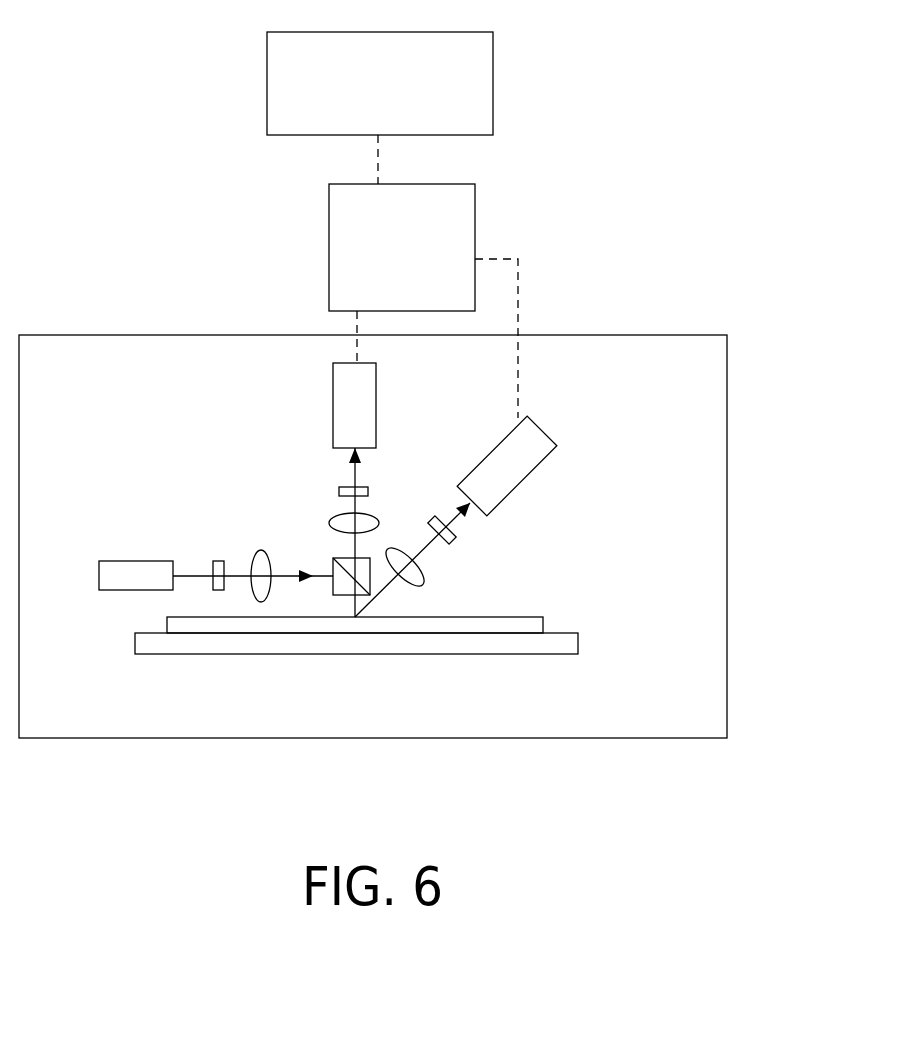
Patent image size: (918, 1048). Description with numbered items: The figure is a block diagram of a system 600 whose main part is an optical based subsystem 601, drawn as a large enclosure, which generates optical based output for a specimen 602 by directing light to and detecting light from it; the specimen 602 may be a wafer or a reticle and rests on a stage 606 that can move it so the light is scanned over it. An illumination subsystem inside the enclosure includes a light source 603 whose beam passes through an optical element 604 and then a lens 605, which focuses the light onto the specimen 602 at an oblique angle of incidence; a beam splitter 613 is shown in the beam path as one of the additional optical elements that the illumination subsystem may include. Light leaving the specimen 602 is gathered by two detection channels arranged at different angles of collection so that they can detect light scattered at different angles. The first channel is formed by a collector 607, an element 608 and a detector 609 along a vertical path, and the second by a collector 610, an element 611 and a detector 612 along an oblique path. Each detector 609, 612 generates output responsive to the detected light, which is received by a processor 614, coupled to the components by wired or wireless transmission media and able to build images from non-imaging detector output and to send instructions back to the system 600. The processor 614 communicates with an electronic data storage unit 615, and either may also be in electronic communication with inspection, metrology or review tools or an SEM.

The system 600 is at (150, 94).
The optical based subsystem 601 is at (727, 356).
The specimen 602 is at (167, 618).
The light source 603 is at (108, 562).
The optical element 604 is at (218, 560).
The lens 605 is at (258, 549).
The stage 606 is at (135, 642).
The collector 607 is at (333, 518).
The element 608 is at (339, 487).
The detector 609 is at (333, 408).
The collector 610 is at (425, 585).
The element 611 is at (455, 543).
The detector 612 is at (542, 462).
The beam splitter 613 is at (341, 560).
The processor 614 is at (423, 276).
The electronic data storage unit 615 is at (380, 83).